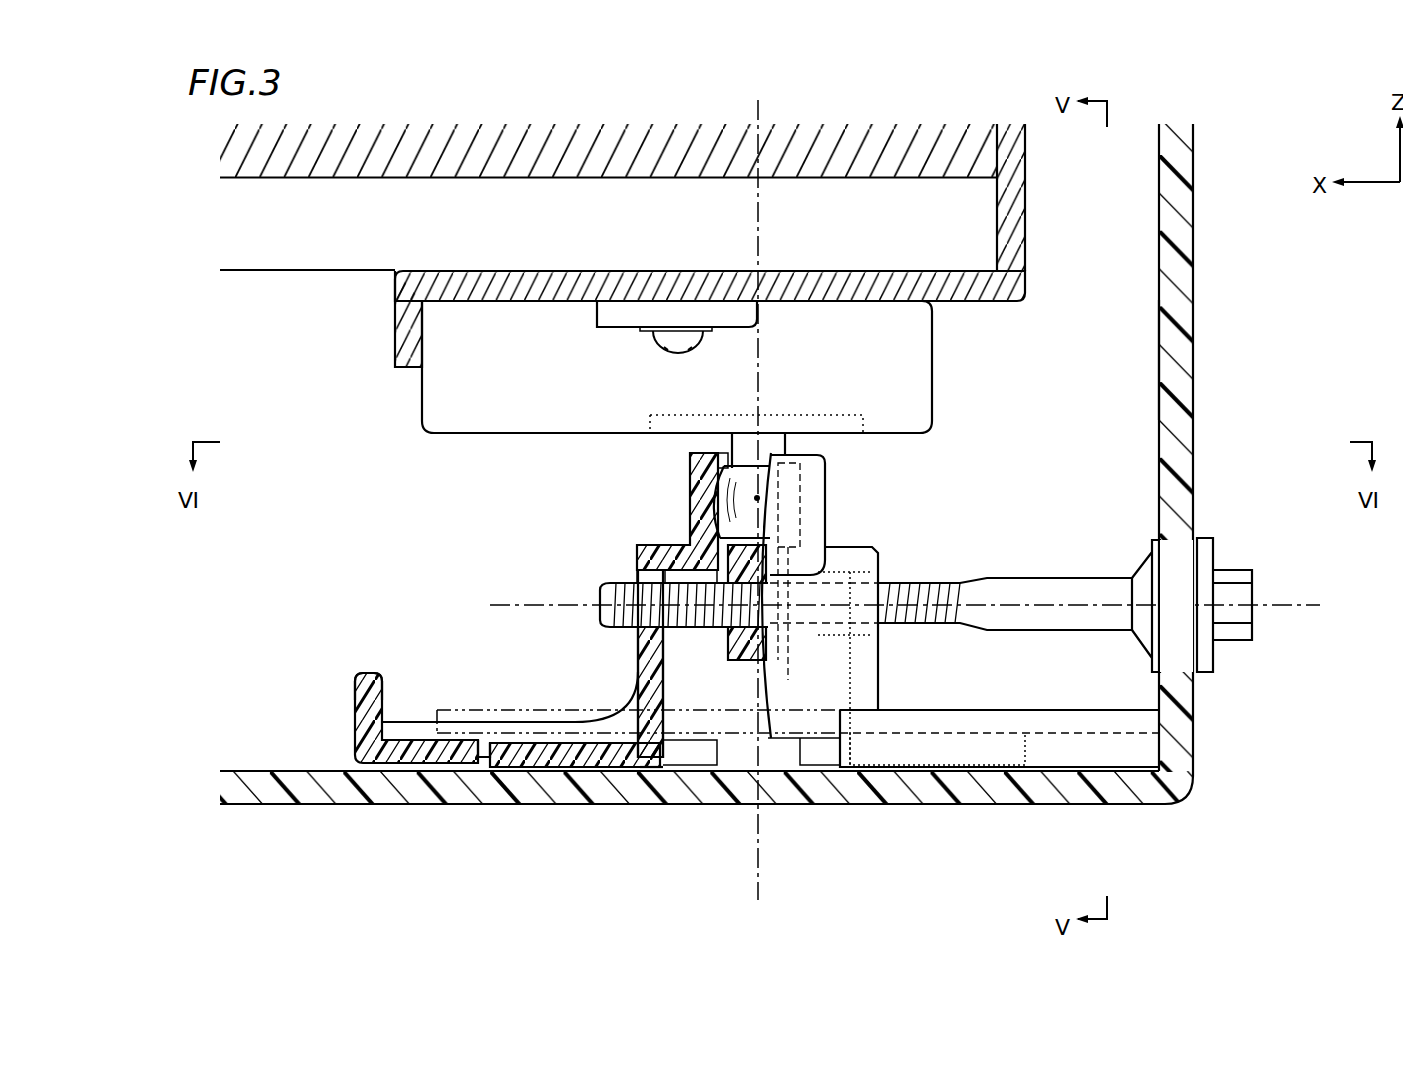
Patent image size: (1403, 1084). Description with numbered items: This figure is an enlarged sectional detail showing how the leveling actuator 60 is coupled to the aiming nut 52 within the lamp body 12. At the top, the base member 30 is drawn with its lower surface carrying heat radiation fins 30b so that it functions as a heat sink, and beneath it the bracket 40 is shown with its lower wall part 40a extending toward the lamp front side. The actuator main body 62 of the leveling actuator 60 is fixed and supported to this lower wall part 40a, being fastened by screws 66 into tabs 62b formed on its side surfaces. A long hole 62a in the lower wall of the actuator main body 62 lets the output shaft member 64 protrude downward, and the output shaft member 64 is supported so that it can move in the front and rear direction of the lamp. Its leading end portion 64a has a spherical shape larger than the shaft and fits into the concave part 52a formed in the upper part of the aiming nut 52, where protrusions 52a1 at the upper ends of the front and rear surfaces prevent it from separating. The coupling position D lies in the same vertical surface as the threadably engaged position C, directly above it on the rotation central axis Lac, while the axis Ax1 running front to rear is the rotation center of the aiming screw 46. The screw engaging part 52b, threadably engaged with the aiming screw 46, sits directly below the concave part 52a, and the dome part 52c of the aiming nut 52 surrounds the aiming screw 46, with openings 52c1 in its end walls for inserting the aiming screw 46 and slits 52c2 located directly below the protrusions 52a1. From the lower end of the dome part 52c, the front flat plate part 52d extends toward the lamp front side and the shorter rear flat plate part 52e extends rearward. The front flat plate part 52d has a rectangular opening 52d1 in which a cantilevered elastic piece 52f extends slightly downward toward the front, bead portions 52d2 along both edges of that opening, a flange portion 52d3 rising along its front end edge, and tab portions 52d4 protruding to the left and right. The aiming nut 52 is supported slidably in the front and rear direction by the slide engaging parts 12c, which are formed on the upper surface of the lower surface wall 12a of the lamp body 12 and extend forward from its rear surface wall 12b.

The lamp body 12 is at (792, 523).
The lower surface wall 12a is at (315, 797).
The rear surface wall 12b is at (1183, 355).
The slide engaging parts 12c is at (1010, 727).
The base member 30 is at (651, 239).
The heat radiation fins 30b is at (363, 250).
The bracket 40 is at (823, 263).
The lower wall part 40a is at (878, 295).
The aiming screw 46 is at (1035, 570).
The aiming nut 52 is at (644, 629).
The concave part 52a is at (698, 477).
The protrusions 52a1 is at (730, 460).
The screw engaging part 52b is at (730, 637).
The dome part 52c is at (827, 609).
The openings 52c1 is at (645, 630).
The slits 52c2 is at (720, 537).
The front flat plate part 52d is at (442, 761).
The opening 52d1 is at (487, 757).
The bead portions 52d2 is at (460, 728).
The flange portion 52d3 is at (362, 693).
The tab portions 52d4 is at (662, 773).
The rear flat plate part 52e is at (940, 765).
The elastic piece 52f is at (552, 768).
The leveling actuator 60 is at (601, 427).
The actuator main body 62 is at (515, 422).
The long hole 62a is at (700, 433).
The tabs 62b is at (615, 322).
The output shaft member 64 is at (759, 485).
The leading end portion 64a is at (717, 491).
The screws 66 is at (677, 350).
The coupling position D is at (758, 498).
The threadably engaged position C is at (764, 606).
The axis Ax1 is at (553, 602).
The rotation central axis Lac is at (765, 823).